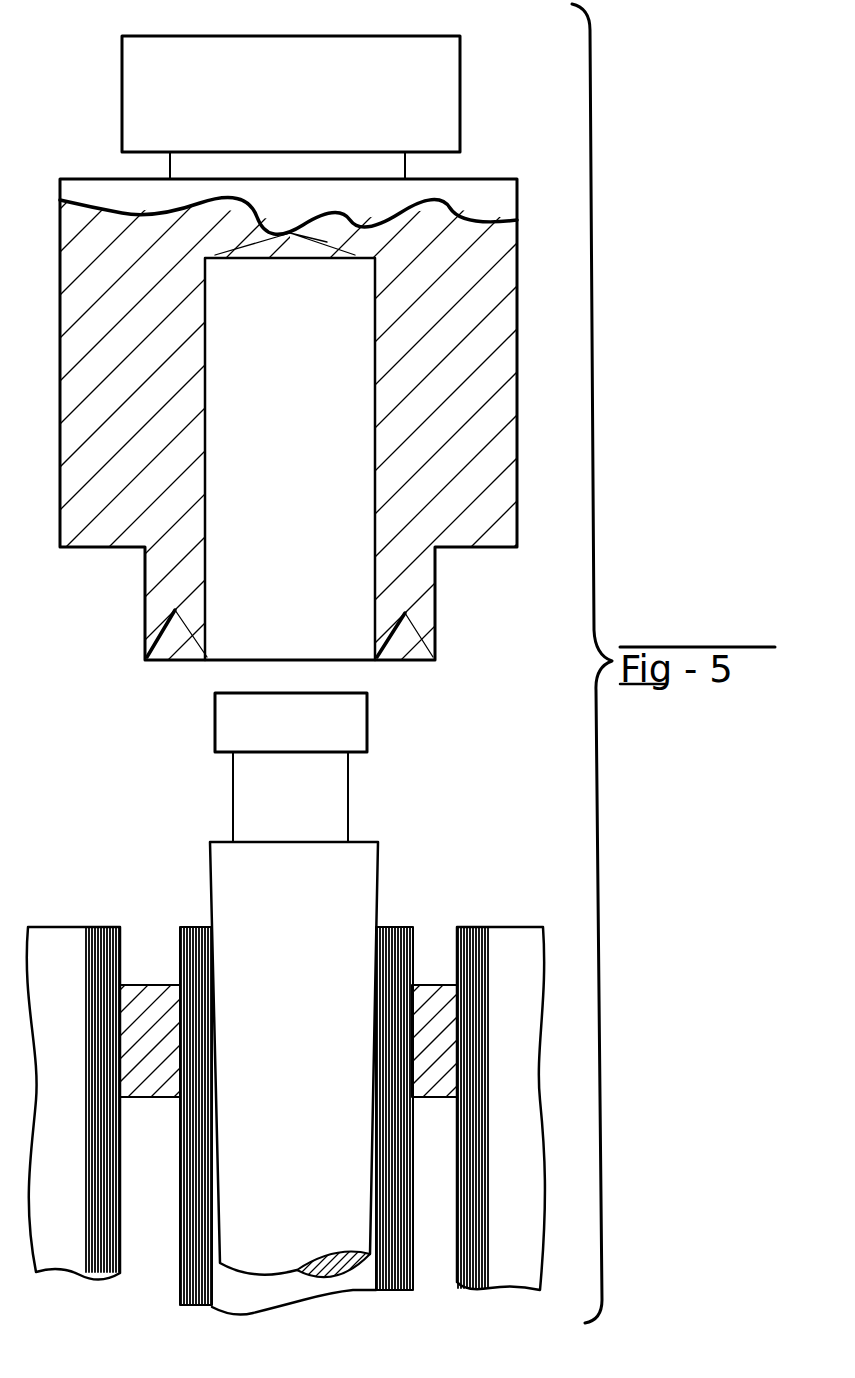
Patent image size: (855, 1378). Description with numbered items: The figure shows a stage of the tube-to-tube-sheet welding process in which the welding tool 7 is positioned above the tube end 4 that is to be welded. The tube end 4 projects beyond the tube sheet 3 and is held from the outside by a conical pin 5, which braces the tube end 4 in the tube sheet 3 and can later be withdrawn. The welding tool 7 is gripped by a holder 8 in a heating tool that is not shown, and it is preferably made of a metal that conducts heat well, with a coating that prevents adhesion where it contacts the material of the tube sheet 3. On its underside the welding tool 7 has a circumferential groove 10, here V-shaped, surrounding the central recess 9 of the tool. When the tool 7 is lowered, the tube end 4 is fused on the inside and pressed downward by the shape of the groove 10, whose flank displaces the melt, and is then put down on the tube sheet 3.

The tube sheet 3 is at (143, 997).
The tube end 4 is at (192, 923).
The conical pin 5 is at (332, 932).
The welding tool 7 is at (492, 357).
The holder 8 is at (437, 105).
The bore 9 is at (345, 592).
The circumferential groove 10 is at (408, 645).